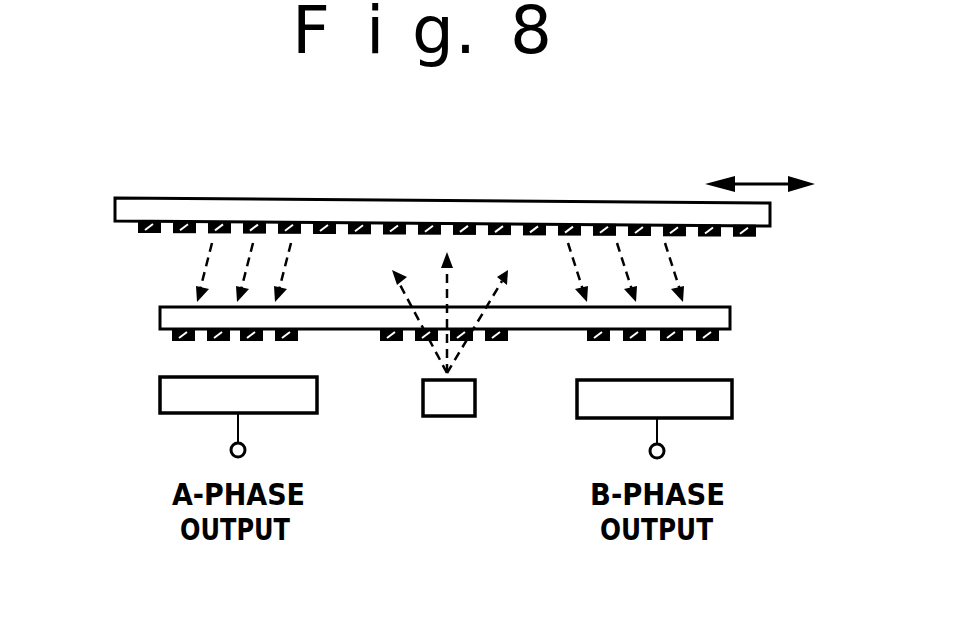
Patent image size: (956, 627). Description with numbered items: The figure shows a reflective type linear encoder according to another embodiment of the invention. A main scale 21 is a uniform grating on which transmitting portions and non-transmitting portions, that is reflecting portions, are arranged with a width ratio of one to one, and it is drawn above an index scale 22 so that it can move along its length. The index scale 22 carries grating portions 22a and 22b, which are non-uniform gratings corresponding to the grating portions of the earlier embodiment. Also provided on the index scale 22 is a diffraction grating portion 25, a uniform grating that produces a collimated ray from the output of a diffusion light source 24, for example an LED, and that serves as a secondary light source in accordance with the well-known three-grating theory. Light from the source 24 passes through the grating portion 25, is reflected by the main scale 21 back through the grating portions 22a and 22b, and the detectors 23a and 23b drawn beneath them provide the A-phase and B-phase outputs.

The main scale 21 is at (243, 198).
The index scale 22 is at (160, 315).
The grating portion 22a is at (280, 350).
The grating portion 22b is at (700, 352).
The A-phase photodetector 23a is at (160, 396).
The B-phase photodetector 23b is at (722, 398).
The diffusion light source 24 is at (450, 405).
The diffraction grating portion 25 is at (478, 350).